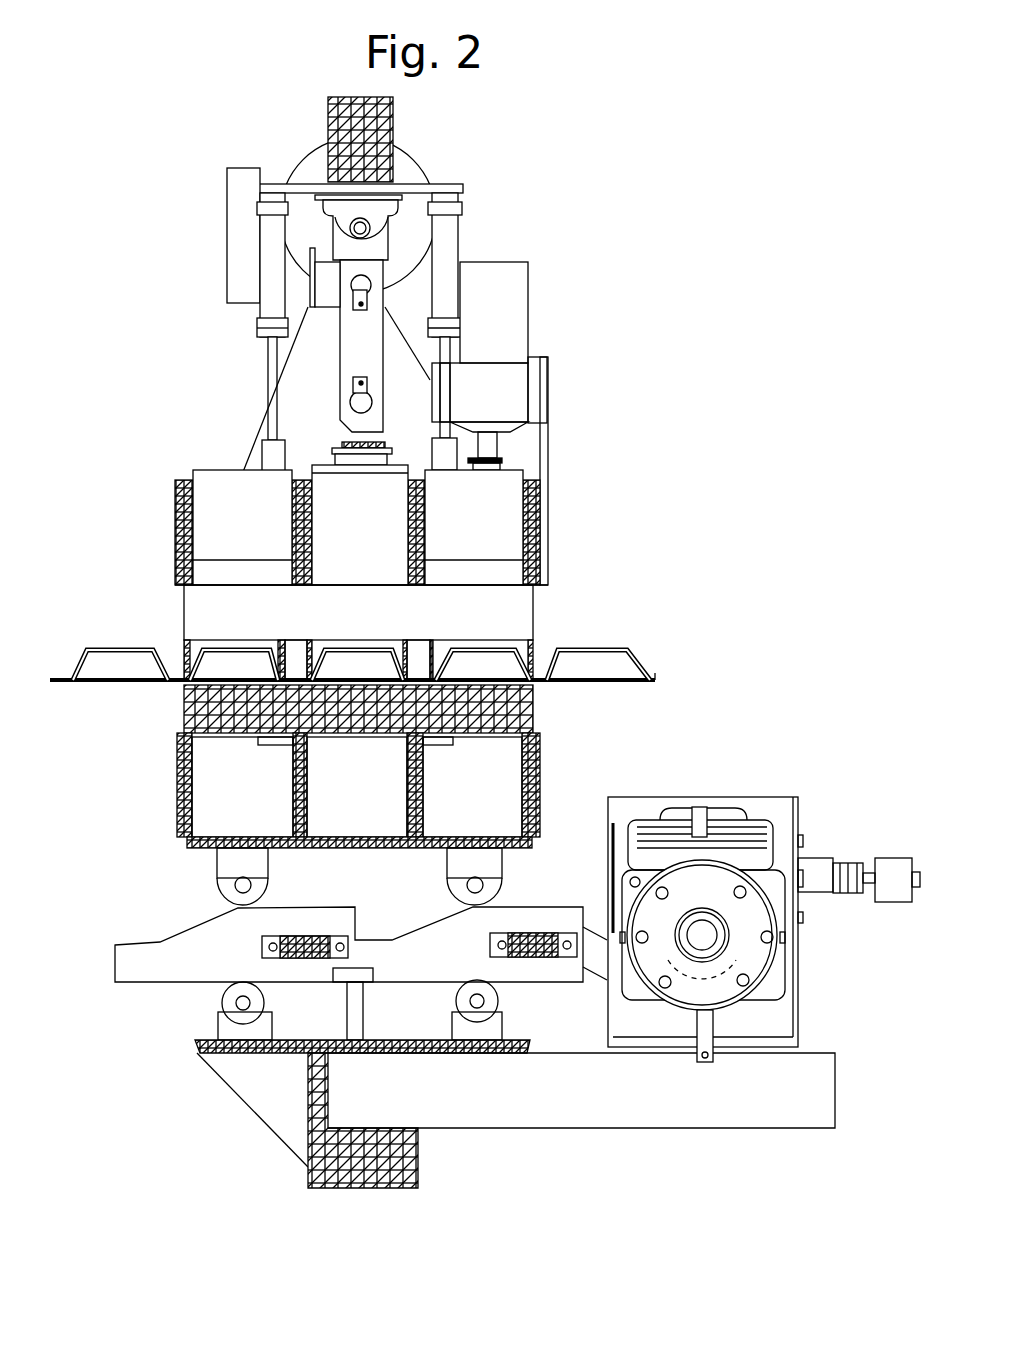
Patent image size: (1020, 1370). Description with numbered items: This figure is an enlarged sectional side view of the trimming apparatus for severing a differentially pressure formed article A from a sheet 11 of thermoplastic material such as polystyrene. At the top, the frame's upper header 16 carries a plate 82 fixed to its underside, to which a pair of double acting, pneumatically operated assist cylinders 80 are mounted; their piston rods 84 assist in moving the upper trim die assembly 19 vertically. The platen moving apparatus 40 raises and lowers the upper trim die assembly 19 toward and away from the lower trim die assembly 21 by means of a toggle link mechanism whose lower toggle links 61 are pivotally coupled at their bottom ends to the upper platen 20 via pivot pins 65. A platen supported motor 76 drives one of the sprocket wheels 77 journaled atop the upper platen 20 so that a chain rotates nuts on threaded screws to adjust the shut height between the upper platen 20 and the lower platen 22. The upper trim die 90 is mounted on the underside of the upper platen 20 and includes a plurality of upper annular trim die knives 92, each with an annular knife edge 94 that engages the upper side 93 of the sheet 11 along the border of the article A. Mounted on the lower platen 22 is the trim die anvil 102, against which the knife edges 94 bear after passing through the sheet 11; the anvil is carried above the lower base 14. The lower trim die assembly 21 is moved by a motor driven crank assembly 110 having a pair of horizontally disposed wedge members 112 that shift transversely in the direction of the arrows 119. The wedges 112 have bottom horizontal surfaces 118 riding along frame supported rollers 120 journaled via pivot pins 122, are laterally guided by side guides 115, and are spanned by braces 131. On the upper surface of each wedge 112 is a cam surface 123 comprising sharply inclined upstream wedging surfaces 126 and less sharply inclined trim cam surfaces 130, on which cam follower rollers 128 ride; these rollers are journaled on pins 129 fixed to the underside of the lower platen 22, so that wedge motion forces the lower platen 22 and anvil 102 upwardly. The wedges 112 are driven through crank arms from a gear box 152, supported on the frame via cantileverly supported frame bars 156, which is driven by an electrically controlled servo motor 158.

The upper header 16 is at (393, 125).
The plate 82 is at (454, 186).
The assist cylinders 80 is at (455, 235).
The lower toggle links 61 is at (365, 328).
The platen supported motor 76 is at (528, 303).
The piston rods 84 is at (445, 382).
The sprocket wheels 77 is at (498, 458).
The upper platen 20 is at (535, 513).
The platen moving apparatus 40 is at (188, 323).
The pivot pins 65 is at (350, 402).
The upper trim die assembly 19 is at (158, 512).
The sheet 11 is at (58, 678).
The article A is at (217, 652).
The upper trim die 90 is at (574, 609).
The upper annular trim die knives 92 is at (522, 658).
The annular knife edge 94 is at (653, 672).
The upper side of the sheet 93 is at (170, 685).
The trim die anvil 102 is at (503, 700).
The lower trim die assembly 21 is at (172, 752).
The lower platen 22 is at (537, 783).
The motor driven crank assembly 110 is at (742, 743).
The servo motor 158 is at (887, 862).
The cam surface 123 is at (183, 883).
The cam follower rollers 128 is at (257, 880).
The arrows 119 is at (199, 947).
The upstream wedging surfaces 126 is at (190, 928).
The trim cam surfaces 130 is at (525, 903).
The pins 129 is at (457, 892).
The gear box 152 is at (715, 932).
The frame supported rollers 120 is at (250, 990).
The side guides 115 is at (353, 977).
The braces 131 is at (543, 955).
The bottom horizontal surfaces 118 is at (128, 983).
The pivot pins 122 is at (243, 1005).
The wedge members 112 is at (530, 983).
The lower base 14 is at (410, 1167).
The frame bars 156 is at (733, 1105).